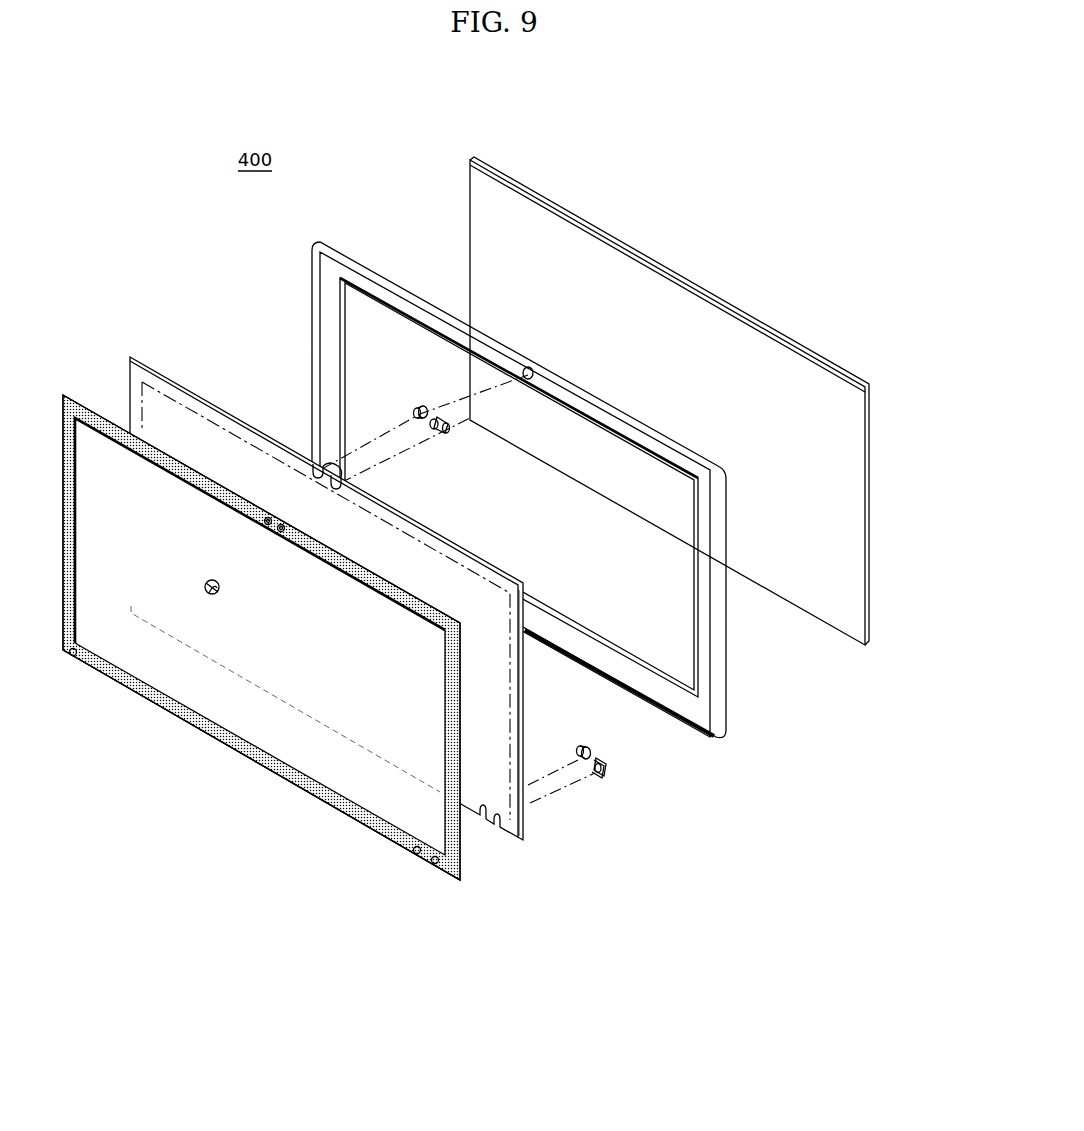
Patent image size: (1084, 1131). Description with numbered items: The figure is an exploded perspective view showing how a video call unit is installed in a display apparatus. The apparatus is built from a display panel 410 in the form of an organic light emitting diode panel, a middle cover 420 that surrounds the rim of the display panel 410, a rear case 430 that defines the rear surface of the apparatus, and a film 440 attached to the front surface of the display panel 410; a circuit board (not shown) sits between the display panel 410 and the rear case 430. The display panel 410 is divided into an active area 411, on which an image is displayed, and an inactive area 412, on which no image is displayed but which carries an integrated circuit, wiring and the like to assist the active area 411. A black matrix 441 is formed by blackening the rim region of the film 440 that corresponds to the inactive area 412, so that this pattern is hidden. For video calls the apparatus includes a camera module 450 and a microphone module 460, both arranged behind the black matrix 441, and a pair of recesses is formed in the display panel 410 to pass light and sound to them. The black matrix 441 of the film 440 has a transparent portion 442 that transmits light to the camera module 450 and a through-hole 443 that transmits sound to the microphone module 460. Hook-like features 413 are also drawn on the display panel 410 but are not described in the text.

The display panel 410 is at (383, 603).
The active area 411 is at (490, 700).
The inactive area 412 is at (516, 663).
The hook 413 is at (330, 470).
The middle cover 420 is at (734, 724).
The rear case 430 is at (882, 618).
The film 440 is at (297, 663).
The black matrix 441 is at (236, 746).
The transparent portion 442 is at (281, 532).
The through-hole 443 is at (266, 517).
The camera module 450 is at (448, 432).
The microphone module 460 is at (417, 408).